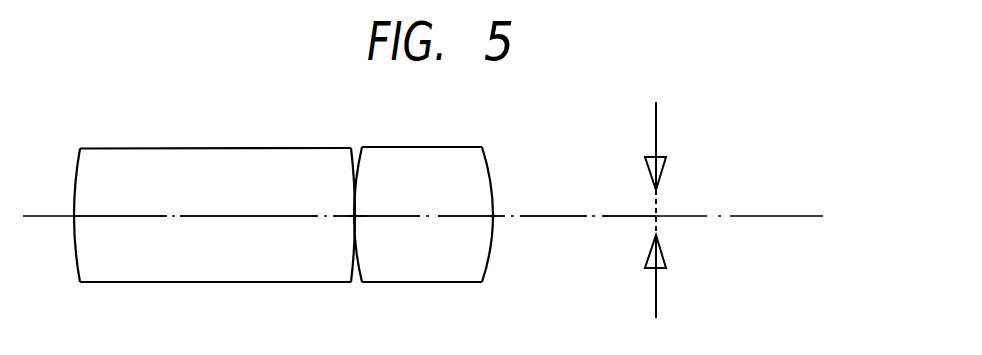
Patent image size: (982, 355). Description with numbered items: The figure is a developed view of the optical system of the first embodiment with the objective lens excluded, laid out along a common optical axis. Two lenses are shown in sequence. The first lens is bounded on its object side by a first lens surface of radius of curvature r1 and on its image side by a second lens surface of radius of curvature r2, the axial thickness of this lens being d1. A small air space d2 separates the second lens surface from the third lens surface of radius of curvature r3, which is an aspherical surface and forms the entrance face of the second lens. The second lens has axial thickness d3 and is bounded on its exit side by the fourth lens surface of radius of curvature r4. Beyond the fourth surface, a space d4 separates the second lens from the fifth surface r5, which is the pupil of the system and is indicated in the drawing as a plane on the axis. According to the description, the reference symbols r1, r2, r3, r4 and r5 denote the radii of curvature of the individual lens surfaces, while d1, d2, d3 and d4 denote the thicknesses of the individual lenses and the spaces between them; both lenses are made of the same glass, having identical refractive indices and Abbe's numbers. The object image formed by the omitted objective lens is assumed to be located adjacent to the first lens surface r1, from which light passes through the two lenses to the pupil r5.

The radius of curvature of first lens surface r1 is at (78, 165).
The radius of curvature of second lens surface r2 is at (355, 144).
The radius of curvature of third lens surface r3 is at (358, 146).
The radius of curvature of fourth lens surface r4 is at (492, 146).
The pupil r5 is at (653, 135).
The thickness of first lens d1 is at (188, 214).
The space between first and second lenses d2 is at (357, 274).
The thickness of second lens d3 is at (417, 214).
The space between second lens and pupil d4 is at (560, 214).